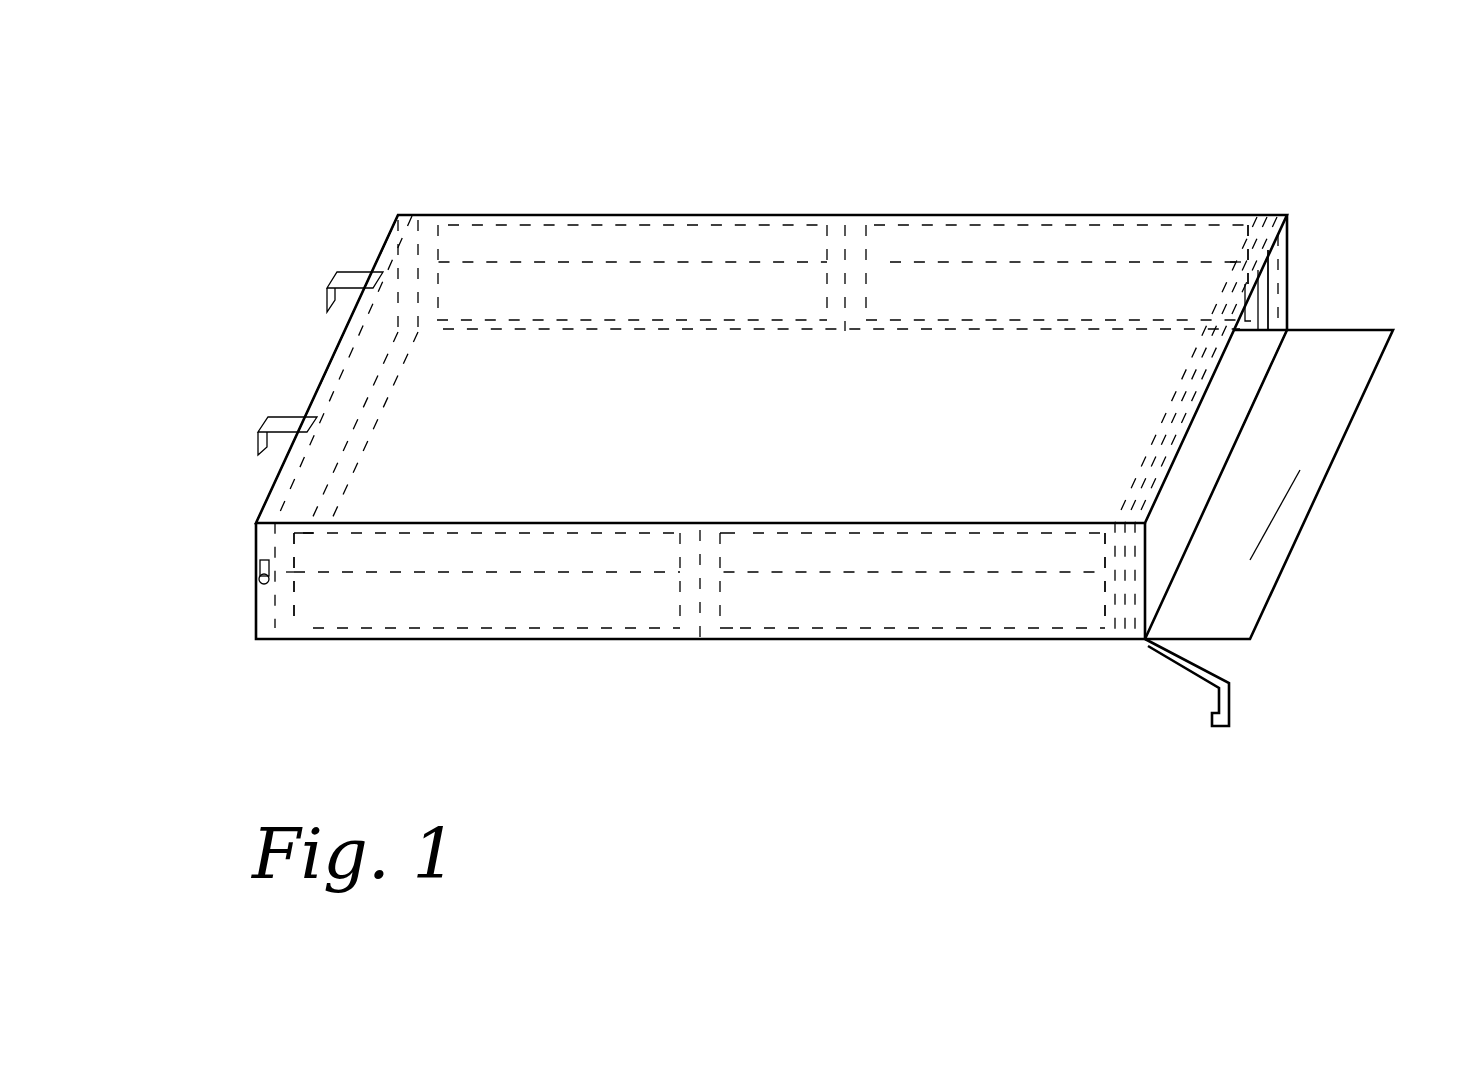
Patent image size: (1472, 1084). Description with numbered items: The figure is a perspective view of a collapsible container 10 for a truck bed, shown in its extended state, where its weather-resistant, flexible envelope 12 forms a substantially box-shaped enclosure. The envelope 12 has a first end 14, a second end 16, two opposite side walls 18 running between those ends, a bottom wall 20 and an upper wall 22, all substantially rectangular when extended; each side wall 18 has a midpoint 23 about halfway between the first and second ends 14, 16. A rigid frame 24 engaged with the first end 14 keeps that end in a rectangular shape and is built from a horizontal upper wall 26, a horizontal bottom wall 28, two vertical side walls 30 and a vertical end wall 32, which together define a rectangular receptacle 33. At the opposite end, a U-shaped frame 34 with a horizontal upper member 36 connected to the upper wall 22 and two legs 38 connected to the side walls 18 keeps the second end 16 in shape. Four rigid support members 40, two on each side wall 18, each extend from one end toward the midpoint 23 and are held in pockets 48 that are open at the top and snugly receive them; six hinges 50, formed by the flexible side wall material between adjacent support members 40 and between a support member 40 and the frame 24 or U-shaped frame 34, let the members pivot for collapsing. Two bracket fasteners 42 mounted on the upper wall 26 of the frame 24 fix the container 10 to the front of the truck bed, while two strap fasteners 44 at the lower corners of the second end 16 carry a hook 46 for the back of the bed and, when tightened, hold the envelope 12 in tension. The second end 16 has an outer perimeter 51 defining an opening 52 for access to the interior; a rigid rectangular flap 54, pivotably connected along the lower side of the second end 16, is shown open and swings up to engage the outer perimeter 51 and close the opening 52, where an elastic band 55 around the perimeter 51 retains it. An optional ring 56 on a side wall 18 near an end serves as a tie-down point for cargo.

The collapsible container 10 is at (806, 183).
The flexible envelope 12 is at (775, 640).
The first end 14 is at (313, 397).
The second end 16 is at (1288, 307).
The side walls 18 is at (1093, 295).
The bottom wall 20 is at (930, 640).
The upper wall 22 is at (603, 430).
The midpoint 23 is at (855, 218).
The frame 24 is at (268, 537).
The horizontal upper wall 26 is at (340, 355).
The horizontal bottom wall 28 is at (312, 533).
The vertical side walls 30 is at (405, 215).
The vertical end wall 32 is at (390, 245).
The rectangular receptacle 33 is at (353, 397).
The U-shaped frame 34 is at (1178, 392).
The horizontal upper member 36 is at (1217, 308).
The legs 38 is at (1262, 287).
The support members 40 is at (590, 235).
The fasteners 42 is at (337, 280).
The fasteners 44 is at (1197, 665).
The hook 46 is at (1228, 728).
The pockets 48 is at (660, 300).
The hinges 50 is at (437, 217).
The outer perimeter 51 is at (1158, 500).
The opening 52 is at (1210, 436).
The flap 54 is at (1280, 515).
The elastic band 55 is at (1115, 640).
The ring 56 is at (262, 582).